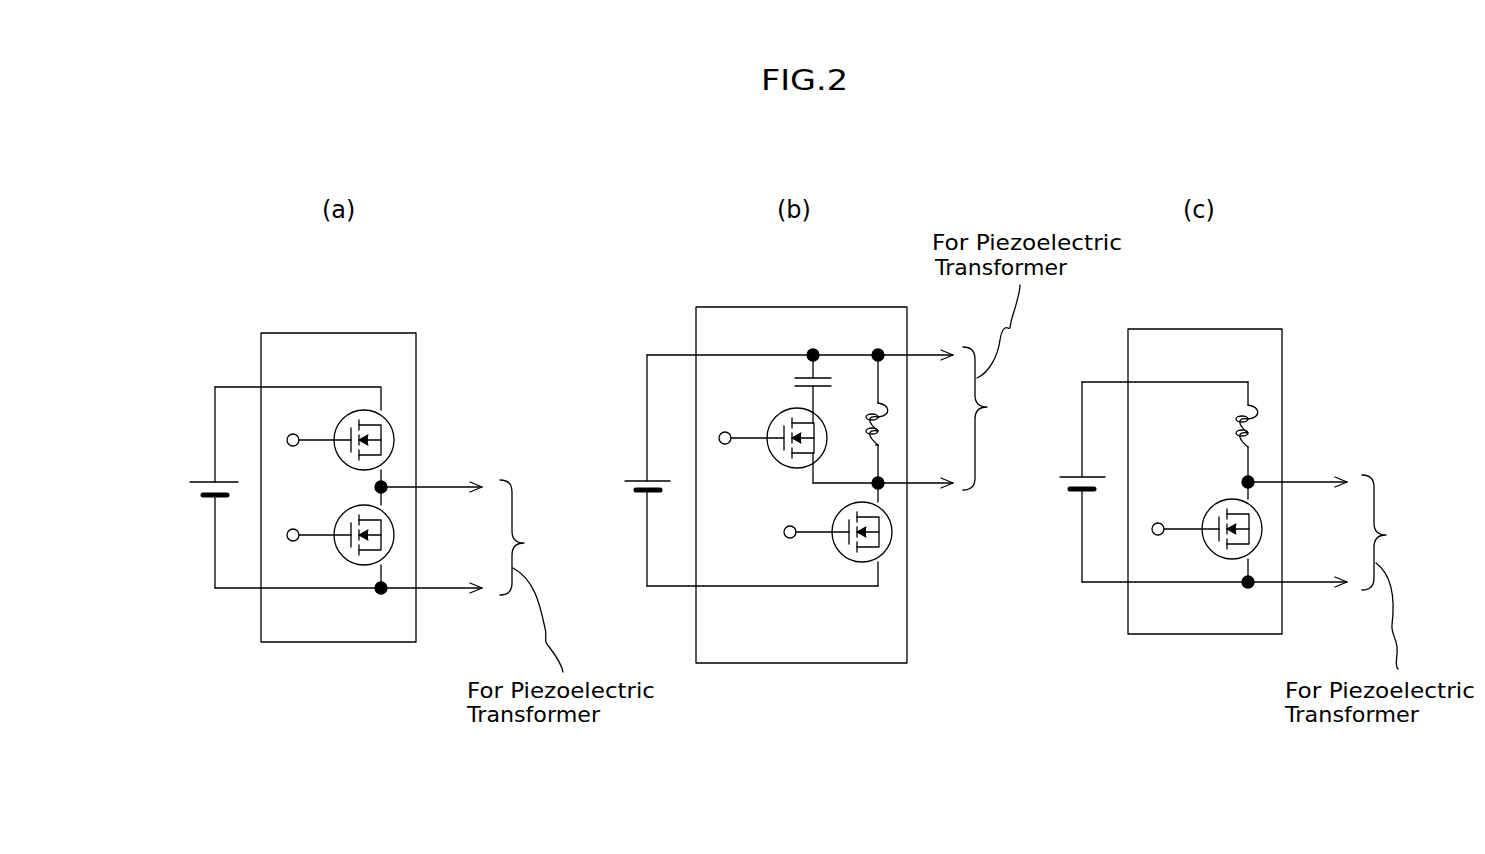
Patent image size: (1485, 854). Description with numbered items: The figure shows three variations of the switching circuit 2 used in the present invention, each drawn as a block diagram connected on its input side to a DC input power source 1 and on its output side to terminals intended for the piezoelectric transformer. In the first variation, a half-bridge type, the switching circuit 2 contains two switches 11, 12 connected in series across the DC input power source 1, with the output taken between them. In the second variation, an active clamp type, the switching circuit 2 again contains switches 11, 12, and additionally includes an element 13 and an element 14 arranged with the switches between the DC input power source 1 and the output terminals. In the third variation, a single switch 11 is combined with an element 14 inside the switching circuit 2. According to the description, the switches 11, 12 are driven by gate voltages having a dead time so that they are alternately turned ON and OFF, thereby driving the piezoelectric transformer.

The DC input power source 1 is at (192, 486).
The switching circuit 2 is at (331, 642).
The switch 11 is at (394, 436).
The switch 12 is at (394, 530).
The capacitor 13 is at (795, 378).
The inductor 14 is at (888, 420).